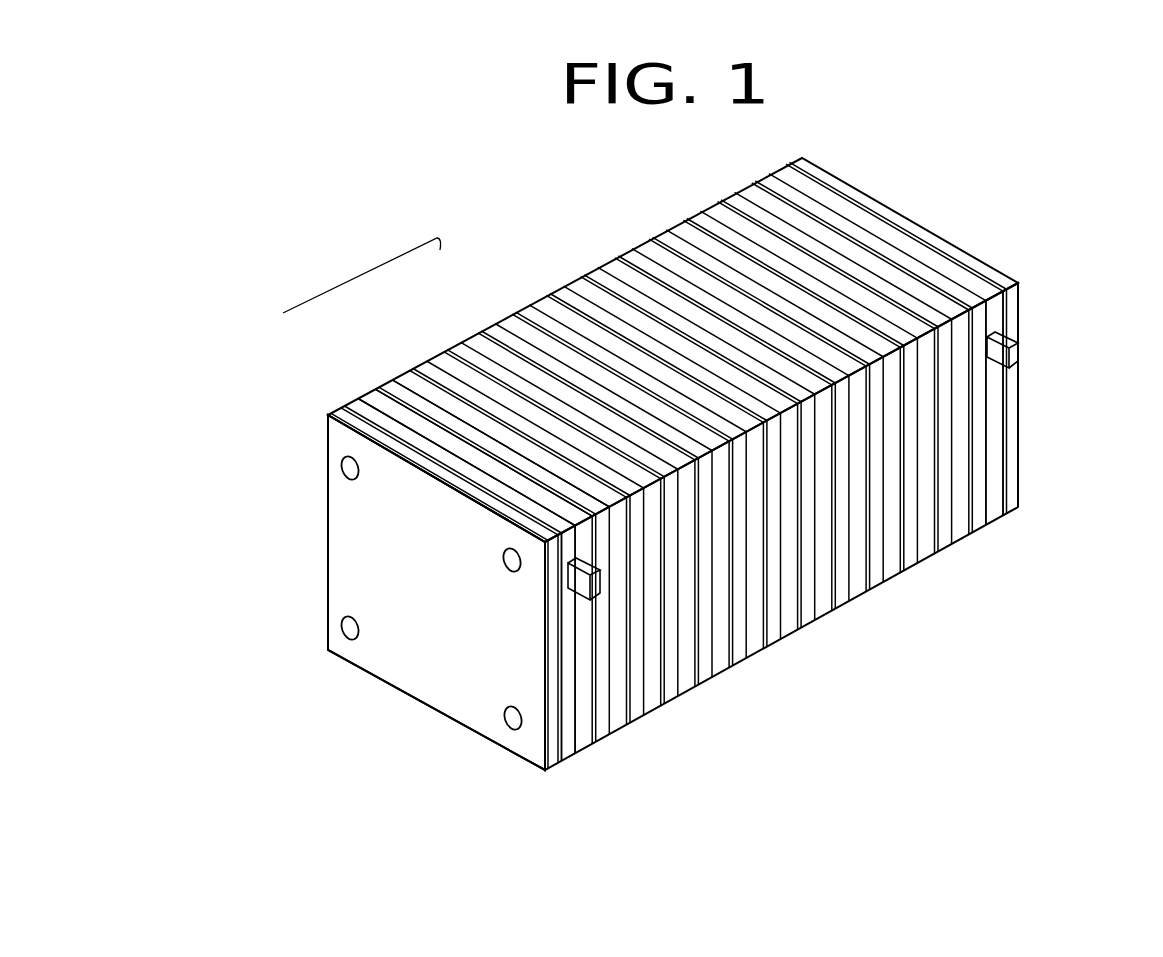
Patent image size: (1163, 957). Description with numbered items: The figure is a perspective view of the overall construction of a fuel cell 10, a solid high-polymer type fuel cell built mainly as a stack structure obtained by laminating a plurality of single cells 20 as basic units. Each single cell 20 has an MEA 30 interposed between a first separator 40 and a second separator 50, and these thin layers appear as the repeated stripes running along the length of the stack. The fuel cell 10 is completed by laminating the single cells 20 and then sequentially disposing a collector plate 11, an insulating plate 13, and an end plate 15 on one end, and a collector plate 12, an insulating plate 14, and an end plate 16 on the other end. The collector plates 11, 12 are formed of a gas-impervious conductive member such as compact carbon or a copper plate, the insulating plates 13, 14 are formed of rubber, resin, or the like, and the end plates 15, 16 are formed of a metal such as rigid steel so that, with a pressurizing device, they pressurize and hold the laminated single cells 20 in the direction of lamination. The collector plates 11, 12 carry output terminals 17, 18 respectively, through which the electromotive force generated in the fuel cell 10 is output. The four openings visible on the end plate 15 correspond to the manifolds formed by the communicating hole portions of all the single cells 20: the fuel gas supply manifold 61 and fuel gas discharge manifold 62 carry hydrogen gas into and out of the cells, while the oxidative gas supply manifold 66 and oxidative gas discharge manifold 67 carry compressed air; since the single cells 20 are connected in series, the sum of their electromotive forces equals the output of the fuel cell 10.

The fuel cell 10 is at (552, 220).
The single cell 20 is at (362, 269).
The MEA 30 is at (412, 372).
The first separator 40 is at (400, 378).
The second separator 50 is at (422, 370).
The collector plate 11 is at (582, 762).
The insulating plate 13 is at (566, 758).
The end plate 15 is at (425, 683).
The collector plate 12 is at (988, 520).
The insulating plate 14 is at (997, 513).
The end plate 16 is at (1012, 507).
The output terminal 17 is at (596, 590).
The output terminal 18 is at (1012, 356).
The fuel gas supply manifold 61 is at (506, 557).
The fuel gas discharge manifold 62 is at (514, 724).
The oxidative gas supply manifold 66 is at (343, 468).
The oxidative gas discharge manifold 67 is at (343, 628).